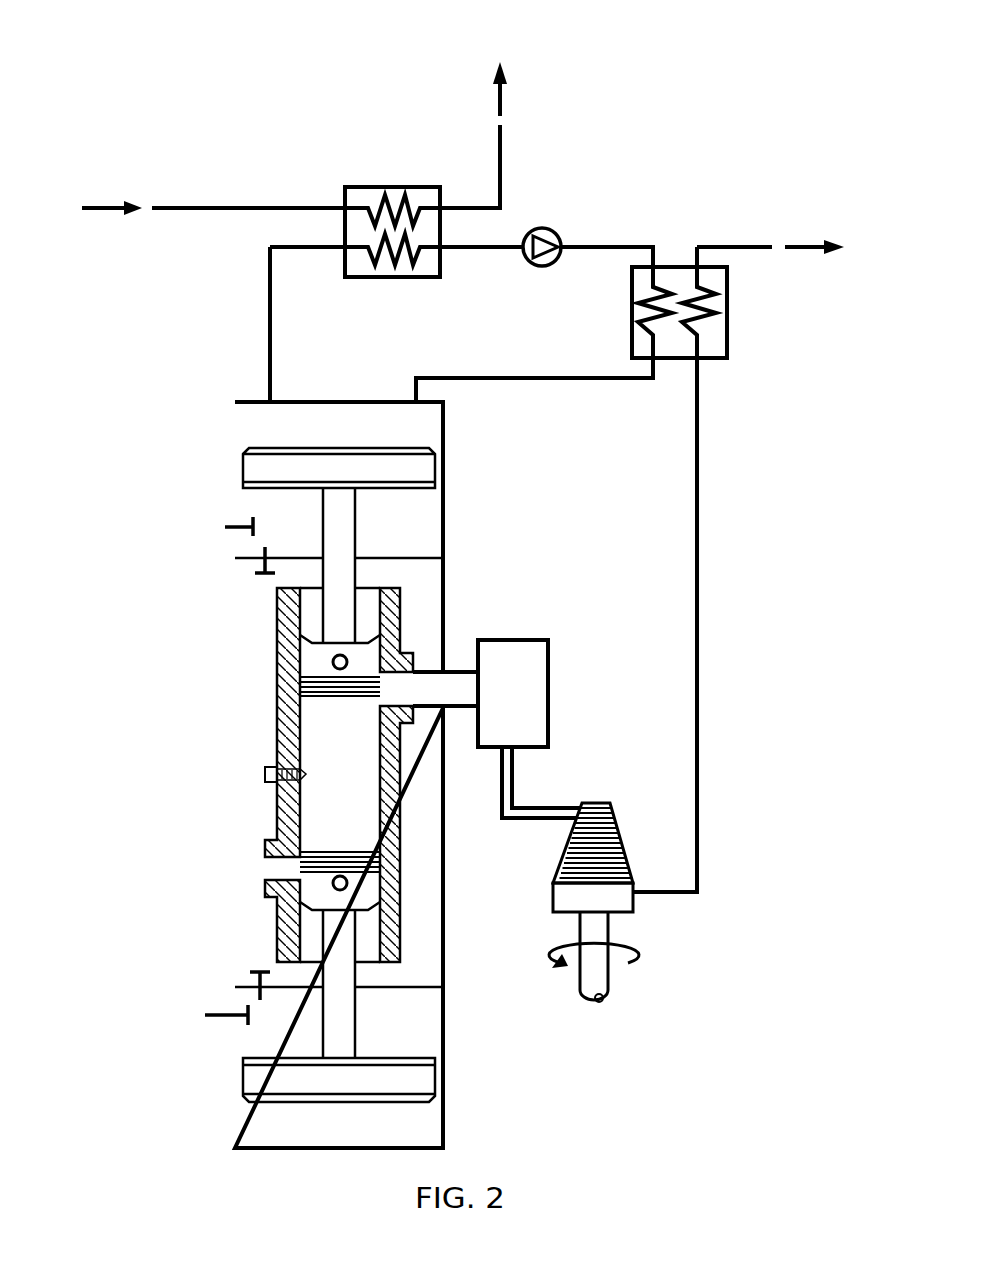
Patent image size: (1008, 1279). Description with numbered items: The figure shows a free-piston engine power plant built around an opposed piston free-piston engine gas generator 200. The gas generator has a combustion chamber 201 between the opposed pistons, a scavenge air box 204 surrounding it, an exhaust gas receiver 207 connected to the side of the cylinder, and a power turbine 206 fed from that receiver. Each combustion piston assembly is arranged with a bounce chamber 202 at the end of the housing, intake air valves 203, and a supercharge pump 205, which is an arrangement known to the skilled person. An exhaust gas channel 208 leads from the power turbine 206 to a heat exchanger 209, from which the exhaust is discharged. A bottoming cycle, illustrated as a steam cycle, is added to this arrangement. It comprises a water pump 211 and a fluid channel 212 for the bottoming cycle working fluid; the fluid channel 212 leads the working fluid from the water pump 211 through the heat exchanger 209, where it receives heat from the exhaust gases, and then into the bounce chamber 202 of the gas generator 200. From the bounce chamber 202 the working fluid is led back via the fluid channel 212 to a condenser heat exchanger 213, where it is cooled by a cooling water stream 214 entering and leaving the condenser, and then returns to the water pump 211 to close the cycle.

The opposed piston free-piston engine gas generator 200 is at (445, 962).
The combustion chamber 201 is at (330, 797).
The bounce chamber 202 is at (252, 425).
The intake air valves 203 is at (232, 1013).
The scavenge air box 204 is at (252, 717).
The supercharge pump 205 is at (252, 497).
The power turbine 206 is at (633, 904).
The exhaust gas receiver 207 is at (512, 652).
The exhaust gas channel 208 is at (697, 609).
The heat exchanger 209 is at (718, 344).
The water pump 211 is at (548, 230).
The fluid channel 212 is at (618, 246).
The condenser heat exchanger 213 is at (358, 194).
The cooling water stream 214 is at (232, 206).